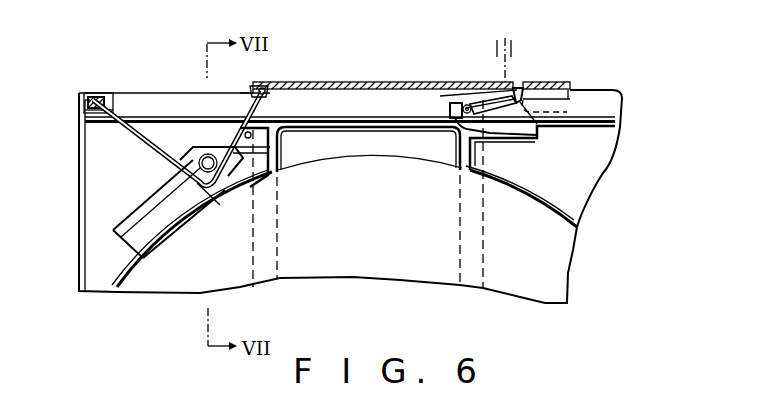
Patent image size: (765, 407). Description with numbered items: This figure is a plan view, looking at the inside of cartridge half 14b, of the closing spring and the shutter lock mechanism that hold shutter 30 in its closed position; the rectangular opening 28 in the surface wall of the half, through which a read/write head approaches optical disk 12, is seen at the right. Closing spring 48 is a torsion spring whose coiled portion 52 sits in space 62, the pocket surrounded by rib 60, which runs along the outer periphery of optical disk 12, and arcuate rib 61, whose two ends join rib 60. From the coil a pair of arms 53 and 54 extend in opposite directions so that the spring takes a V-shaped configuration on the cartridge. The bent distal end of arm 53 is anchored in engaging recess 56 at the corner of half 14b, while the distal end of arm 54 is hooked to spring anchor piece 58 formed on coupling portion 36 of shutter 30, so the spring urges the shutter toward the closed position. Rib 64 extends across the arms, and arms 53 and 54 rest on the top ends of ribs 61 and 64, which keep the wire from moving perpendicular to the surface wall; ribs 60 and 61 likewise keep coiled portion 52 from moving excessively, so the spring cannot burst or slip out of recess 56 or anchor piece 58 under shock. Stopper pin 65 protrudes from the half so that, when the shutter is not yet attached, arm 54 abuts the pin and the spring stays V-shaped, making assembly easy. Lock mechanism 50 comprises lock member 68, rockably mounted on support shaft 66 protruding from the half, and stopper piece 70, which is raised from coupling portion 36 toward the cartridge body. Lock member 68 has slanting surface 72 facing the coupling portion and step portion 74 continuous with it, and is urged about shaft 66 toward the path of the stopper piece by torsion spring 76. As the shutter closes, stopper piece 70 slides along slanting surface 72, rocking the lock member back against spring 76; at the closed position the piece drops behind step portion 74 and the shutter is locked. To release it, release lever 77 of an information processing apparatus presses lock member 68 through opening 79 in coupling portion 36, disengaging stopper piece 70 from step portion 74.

The optical disk 12 is at (555, 282).
The cartridge half 14b is at (592, 193).
The opening 28 is at (458, 153).
The shutter 30 is at (348, 74).
The coupling portion 36 is at (390, 82).
The closing spring 48 is at (150, 163).
The lock mechanism 50 is at (488, 72).
The coiled portion 52 is at (198, 188).
The arm 53 is at (145, 128).
The arm 54 is at (246, 94).
The engaging recess 56 is at (100, 95).
The spring anchor piece 58 is at (270, 96).
The rib 60 is at (160, 246).
The arcuate rib 61 is at (143, 203).
The space 62 is at (172, 208).
The rib 64 is at (185, 121).
The stopper pin 65 is at (273, 138).
The support shaft 66 is at (453, 105).
The lock member 68 is at (537, 138).
The stopper piece 70 is at (557, 98).
The slanting surface 72 is at (470, 98).
The step portion 74 is at (516, 90).
The torsion spring 76 is at (455, 128).
The release lever 77 is at (512, 76).
The opening 79 is at (496, 82).